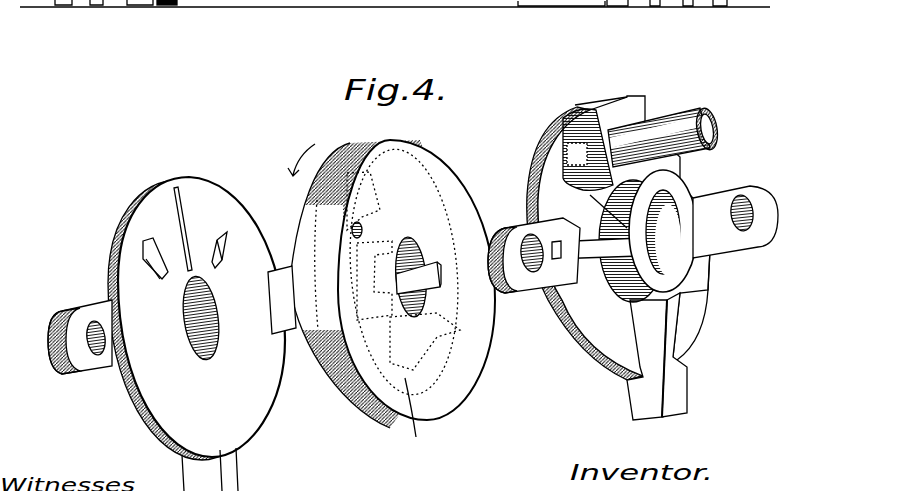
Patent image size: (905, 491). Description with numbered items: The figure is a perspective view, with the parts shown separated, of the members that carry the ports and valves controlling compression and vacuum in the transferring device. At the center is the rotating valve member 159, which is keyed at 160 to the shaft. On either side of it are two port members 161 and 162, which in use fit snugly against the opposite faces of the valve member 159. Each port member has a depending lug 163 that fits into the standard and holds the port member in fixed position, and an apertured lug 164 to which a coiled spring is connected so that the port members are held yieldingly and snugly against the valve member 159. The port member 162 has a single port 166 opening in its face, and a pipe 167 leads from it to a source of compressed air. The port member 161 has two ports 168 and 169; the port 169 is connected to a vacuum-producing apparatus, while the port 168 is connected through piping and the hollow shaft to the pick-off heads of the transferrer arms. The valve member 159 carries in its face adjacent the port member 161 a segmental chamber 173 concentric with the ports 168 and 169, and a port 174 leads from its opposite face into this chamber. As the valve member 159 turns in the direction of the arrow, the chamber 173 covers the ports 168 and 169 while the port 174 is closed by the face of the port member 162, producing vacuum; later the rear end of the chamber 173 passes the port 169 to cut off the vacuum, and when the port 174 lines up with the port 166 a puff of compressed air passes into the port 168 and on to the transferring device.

The central valve member 159 is at (362, 417).
The key 160 is at (438, 265).
The port member 161 is at (147, 432).
The port member 162 is at (590, 368).
The depending lug 163 is at (645, 427).
The apertured lug 164 is at (65, 375).
The port 166 is at (567, 152).
The pipe 167 is at (717, 135).
The port 168 is at (143, 250).
The port 169 is at (222, 236).
The segmental chamber 173 is at (422, 423).
The port 174 is at (363, 228).